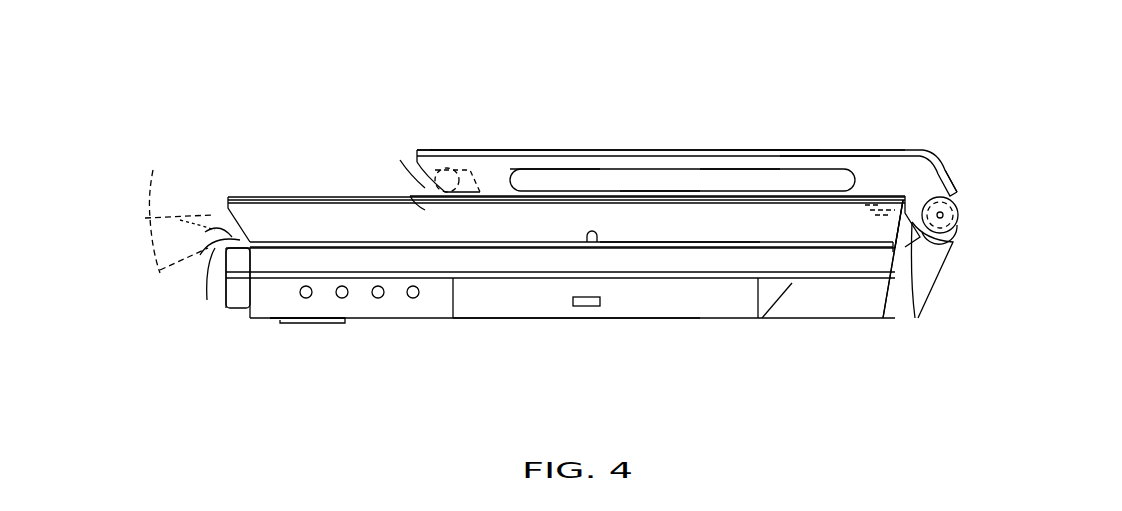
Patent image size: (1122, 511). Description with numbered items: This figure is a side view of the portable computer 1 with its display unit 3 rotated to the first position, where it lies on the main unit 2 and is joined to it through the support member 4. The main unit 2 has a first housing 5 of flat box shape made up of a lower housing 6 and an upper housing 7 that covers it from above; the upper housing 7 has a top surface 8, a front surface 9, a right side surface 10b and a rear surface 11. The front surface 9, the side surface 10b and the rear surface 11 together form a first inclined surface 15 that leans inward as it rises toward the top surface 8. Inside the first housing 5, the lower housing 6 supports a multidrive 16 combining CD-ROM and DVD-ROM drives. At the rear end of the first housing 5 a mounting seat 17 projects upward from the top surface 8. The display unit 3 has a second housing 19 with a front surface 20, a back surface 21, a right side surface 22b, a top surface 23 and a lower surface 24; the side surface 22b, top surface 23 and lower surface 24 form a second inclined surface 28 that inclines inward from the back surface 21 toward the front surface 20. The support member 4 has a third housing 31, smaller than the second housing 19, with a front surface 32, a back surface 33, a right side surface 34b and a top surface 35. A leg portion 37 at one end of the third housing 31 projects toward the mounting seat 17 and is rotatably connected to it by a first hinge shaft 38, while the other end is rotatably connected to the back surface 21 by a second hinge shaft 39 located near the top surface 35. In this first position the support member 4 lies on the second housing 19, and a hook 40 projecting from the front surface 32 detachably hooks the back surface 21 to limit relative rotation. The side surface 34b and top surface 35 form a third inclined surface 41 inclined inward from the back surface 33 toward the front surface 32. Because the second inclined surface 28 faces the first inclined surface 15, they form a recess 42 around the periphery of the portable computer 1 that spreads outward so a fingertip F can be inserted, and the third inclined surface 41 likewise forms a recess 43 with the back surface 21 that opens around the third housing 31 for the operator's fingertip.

The portable computer 1 is at (862, 95).
The main unit 2 is at (490, 322).
The display unit 3 is at (670, 239).
The support member 4 is at (606, 150).
The first housing 5 is at (388, 378).
The lower housing 6 is at (322, 322).
The upper housing 7 is at (378, 280).
The top surface 8 is at (594, 242).
The front surface 9 is at (240, 255).
The right side surface 10b is at (725, 290).
The rear surface 11 is at (882, 290).
The first inclined surface 15 is at (243, 252).
The multidrive 16 is at (545, 300).
The mounting seat 17 is at (925, 295).
The second housing 19 is at (540, 218).
The front surface 20 is at (430, 265).
The back surface 21 is at (342, 197).
The right side surface 22b is at (655, 220).
The top surface 23 is at (232, 225).
The lower surface 24 is at (880, 220).
The second inclined surface 28 is at (935, 192).
The third housing 31 is at (770, 160).
The front surface 32 is at (728, 200).
The back surface 33 is at (800, 150).
The right side surface 34b is at (500, 170).
The top surface 35 is at (428, 186).
The leg portion 37 is at (930, 200).
The first hinge shaft 38 is at (958, 232).
The second hinge shaft 39 is at (440, 150).
The hook 40 is at (870, 210).
The third inclined surface 41 is at (430, 170).
The recess 42 is at (232, 237).
The recess 43 is at (418, 200).
The fingertip F is at (179, 208).